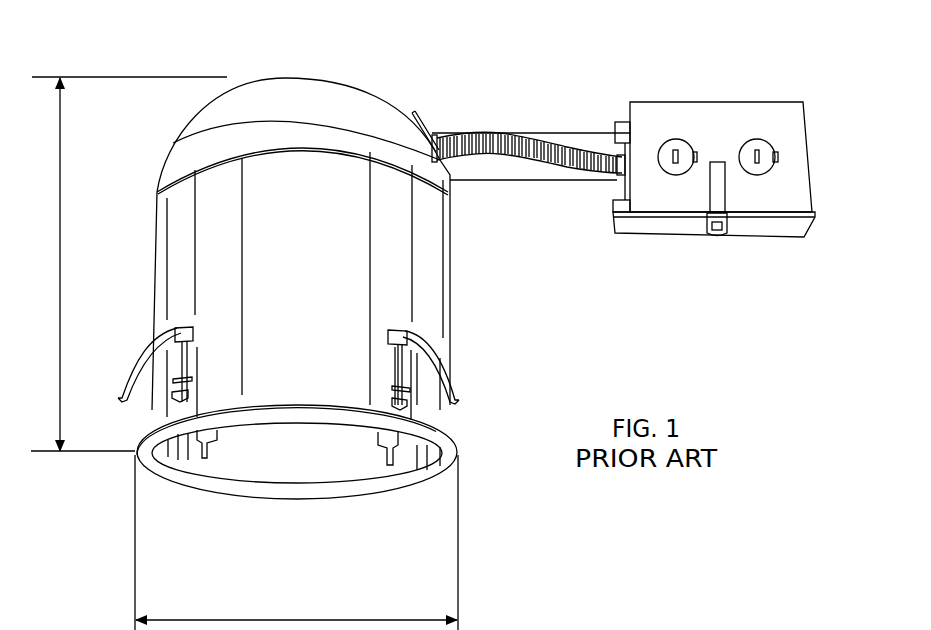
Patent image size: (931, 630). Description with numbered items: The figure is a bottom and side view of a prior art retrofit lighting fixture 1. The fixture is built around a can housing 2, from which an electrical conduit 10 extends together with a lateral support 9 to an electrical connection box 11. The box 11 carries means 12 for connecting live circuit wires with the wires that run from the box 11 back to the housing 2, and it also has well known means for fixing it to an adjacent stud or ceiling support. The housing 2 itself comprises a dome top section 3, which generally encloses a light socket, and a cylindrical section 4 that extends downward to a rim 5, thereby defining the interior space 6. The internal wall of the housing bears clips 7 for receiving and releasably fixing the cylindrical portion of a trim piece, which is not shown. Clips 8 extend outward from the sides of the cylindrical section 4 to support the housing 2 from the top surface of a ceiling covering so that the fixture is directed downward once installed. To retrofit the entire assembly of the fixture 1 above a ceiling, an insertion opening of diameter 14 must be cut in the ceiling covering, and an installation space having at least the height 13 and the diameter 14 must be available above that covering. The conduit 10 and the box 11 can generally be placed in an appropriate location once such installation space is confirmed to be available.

The retrofit lighting fixture 1 is at (453, 83).
The can housing 2 is at (458, 288).
The dome top section 3 is at (277, 112).
The cylindrical section 4 is at (162, 257).
The rim 5 is at (197, 485).
The space 6 is at (330, 472).
The clips 7 is at (210, 440).
The clips 8 is at (138, 370).
The lateral support 9 is at (485, 173).
The electrical conduit 10 is at (510, 137).
The electrical connection box 11 is at (698, 115).
The means for connecting live circuit wires 12 is at (753, 158).
The height 13 is at (127, 264).
The insertion opening diameter 14 is at (296, 542).